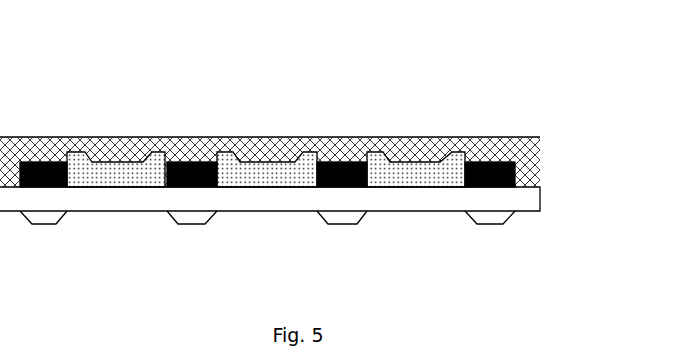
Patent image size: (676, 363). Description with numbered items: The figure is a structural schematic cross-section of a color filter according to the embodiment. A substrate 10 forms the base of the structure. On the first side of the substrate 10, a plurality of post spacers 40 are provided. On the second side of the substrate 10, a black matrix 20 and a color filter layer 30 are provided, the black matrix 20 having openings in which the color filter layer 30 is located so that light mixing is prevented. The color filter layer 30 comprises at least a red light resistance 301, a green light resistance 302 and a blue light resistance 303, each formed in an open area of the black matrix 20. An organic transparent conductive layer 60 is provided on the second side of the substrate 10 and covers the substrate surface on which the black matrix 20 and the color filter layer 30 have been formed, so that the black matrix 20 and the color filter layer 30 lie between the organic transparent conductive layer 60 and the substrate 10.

The substrate 10 is at (540, 200).
The black matrix 20 is at (515, 173).
The color filter layer 30 is at (266, 126).
The red light resistance 301 is at (105, 173).
The green light resistance 302 is at (255, 175).
The blue light resistance 303 is at (416, 145).
The post spacer 40 is at (342, 218).
The organic transparent conductive layer 60 is at (540, 149).